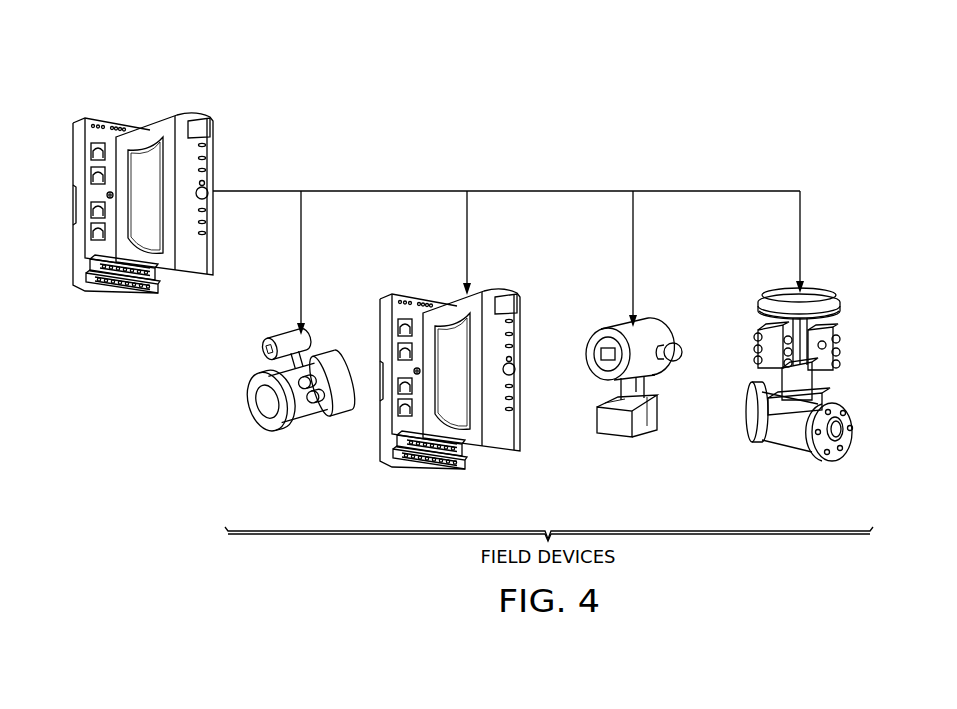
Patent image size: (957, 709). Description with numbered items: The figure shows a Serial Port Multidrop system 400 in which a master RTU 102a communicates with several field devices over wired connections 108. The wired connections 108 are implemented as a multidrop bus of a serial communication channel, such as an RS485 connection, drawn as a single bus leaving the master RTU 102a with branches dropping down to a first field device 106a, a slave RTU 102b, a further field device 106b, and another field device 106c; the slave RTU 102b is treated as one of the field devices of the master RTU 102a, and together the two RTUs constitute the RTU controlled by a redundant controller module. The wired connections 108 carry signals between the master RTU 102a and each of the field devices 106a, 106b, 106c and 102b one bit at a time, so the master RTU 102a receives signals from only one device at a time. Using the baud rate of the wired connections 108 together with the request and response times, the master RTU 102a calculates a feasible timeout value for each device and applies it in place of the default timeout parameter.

The Serial Port Multidrop system 400 is at (331, 66).
The master RTU 102a is at (108, 121).
The slave RTU 102b is at (403, 467).
The wired connections 108 is at (505, 191).
The first field device 106a is at (267, 425).
The field device 106b is at (647, 437).
The field device 106c is at (827, 460).